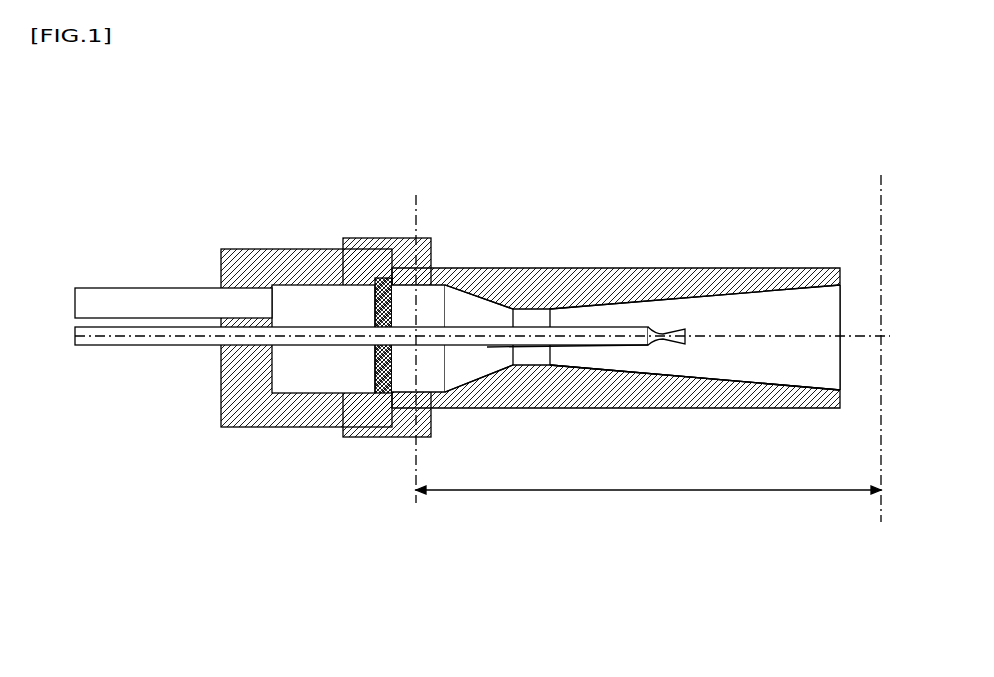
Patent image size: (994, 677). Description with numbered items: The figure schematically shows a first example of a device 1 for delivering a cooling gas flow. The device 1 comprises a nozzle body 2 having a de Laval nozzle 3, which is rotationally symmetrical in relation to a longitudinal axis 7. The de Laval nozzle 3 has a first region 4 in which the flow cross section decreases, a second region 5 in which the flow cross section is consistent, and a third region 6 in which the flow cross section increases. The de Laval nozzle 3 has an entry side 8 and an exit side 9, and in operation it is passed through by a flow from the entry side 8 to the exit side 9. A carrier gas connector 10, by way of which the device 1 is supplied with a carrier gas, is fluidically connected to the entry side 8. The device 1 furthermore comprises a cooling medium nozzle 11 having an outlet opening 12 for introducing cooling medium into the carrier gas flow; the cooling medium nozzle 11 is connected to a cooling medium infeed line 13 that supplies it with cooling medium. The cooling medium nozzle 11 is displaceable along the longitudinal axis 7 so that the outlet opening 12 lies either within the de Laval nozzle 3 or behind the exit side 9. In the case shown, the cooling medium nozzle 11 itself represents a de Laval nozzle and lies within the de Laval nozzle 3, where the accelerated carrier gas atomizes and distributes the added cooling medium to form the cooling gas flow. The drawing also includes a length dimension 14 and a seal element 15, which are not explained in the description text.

The device 1 is at (528, 172).
The nozzle body 2 is at (629, 333).
The de Laval nozzle 3 is at (684, 298).
The first region 4 is at (462, 287).
The second region 5 is at (534, 362).
The third region 6 is at (632, 373).
The longitudinal axis 7 is at (853, 338).
The entry side 8 is at (443, 297).
The exit side 9 is at (842, 313).
The carrier gas connector 10 is at (138, 297).
The cooling medium nozzle 11 is at (487, 347).
The outlet opening 12 is at (690, 340).
The cooling medium infeed line 13 is at (421, 398).
The nozzle length 14 is at (443, 490).
The seal 15 is at (375, 372).